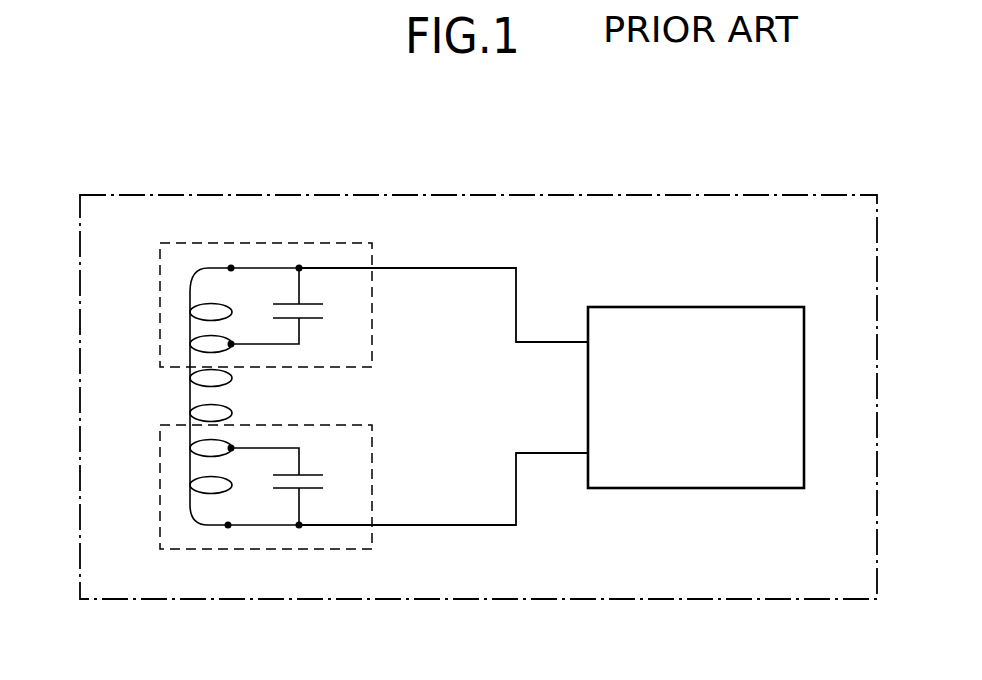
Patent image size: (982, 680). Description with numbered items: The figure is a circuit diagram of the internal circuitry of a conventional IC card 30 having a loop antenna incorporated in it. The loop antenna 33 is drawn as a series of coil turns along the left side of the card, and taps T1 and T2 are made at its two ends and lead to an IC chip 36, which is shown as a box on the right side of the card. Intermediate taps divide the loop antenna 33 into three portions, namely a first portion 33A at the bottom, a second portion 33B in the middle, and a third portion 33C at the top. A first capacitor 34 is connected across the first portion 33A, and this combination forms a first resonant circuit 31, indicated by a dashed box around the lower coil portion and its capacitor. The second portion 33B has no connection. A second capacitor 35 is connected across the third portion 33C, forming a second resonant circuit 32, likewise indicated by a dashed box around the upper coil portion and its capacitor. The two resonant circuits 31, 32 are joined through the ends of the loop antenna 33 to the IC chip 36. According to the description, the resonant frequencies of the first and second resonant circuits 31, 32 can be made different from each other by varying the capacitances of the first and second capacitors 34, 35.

The IC card 30 is at (547, 186).
The first resonant circuit 31 is at (372, 488).
The second resonant circuit 32 is at (372, 310).
The loop antenna 33 is at (132, 366).
The first portion 33A is at (190, 468).
The second portion 33B is at (190, 395).
The third portion 33C is at (190, 295).
The first capacitor 34 is at (305, 474).
The second capacitor 35 is at (304, 322).
The IC chip 36 is at (757, 306).
The tap T1 is at (228, 525).
The tap T2 is at (231, 268).